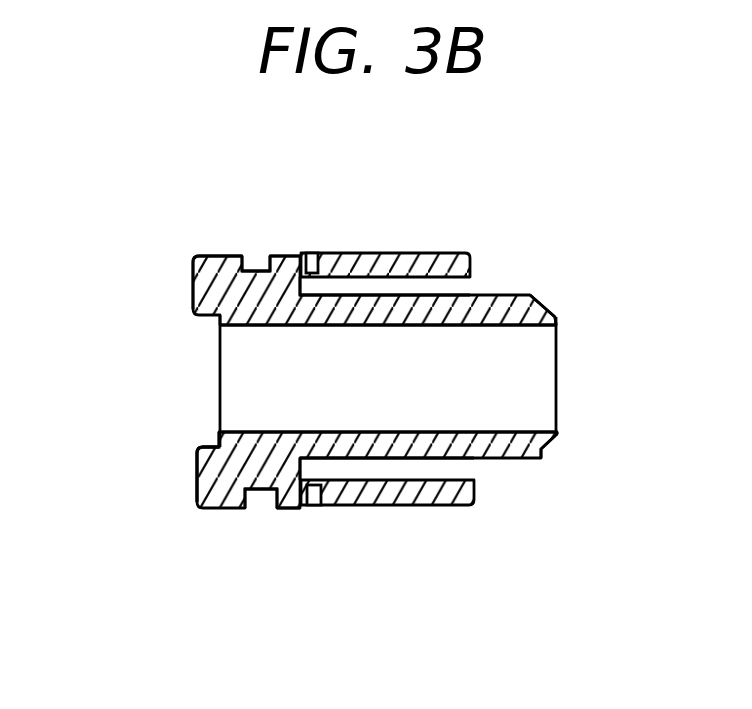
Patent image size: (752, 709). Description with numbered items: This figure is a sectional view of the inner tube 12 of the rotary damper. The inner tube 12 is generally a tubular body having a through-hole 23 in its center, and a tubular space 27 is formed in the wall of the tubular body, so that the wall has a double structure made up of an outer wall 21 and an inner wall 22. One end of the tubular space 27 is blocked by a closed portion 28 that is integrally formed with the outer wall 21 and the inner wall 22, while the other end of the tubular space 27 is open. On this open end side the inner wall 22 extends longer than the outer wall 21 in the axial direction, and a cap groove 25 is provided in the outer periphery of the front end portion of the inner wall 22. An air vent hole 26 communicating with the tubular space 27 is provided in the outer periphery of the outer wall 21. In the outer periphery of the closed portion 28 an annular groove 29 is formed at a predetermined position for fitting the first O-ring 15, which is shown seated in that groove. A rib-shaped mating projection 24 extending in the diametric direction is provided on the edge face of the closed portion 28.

The inner tube 12 is at (160, 317).
The first O-ring 15 is at (270, 250).
The outer wall 21 is at (461, 253).
The inner wall 22 is at (556, 306).
The through-hole 23 is at (535, 368).
The mating projection 24 is at (198, 480).
The cap groove 25 is at (537, 296).
The air vent hole 26 is at (316, 256).
The tubular space 27 is at (480, 285).
The closed portion 28 is at (214, 256).
The annular groove 29 is at (286, 256).